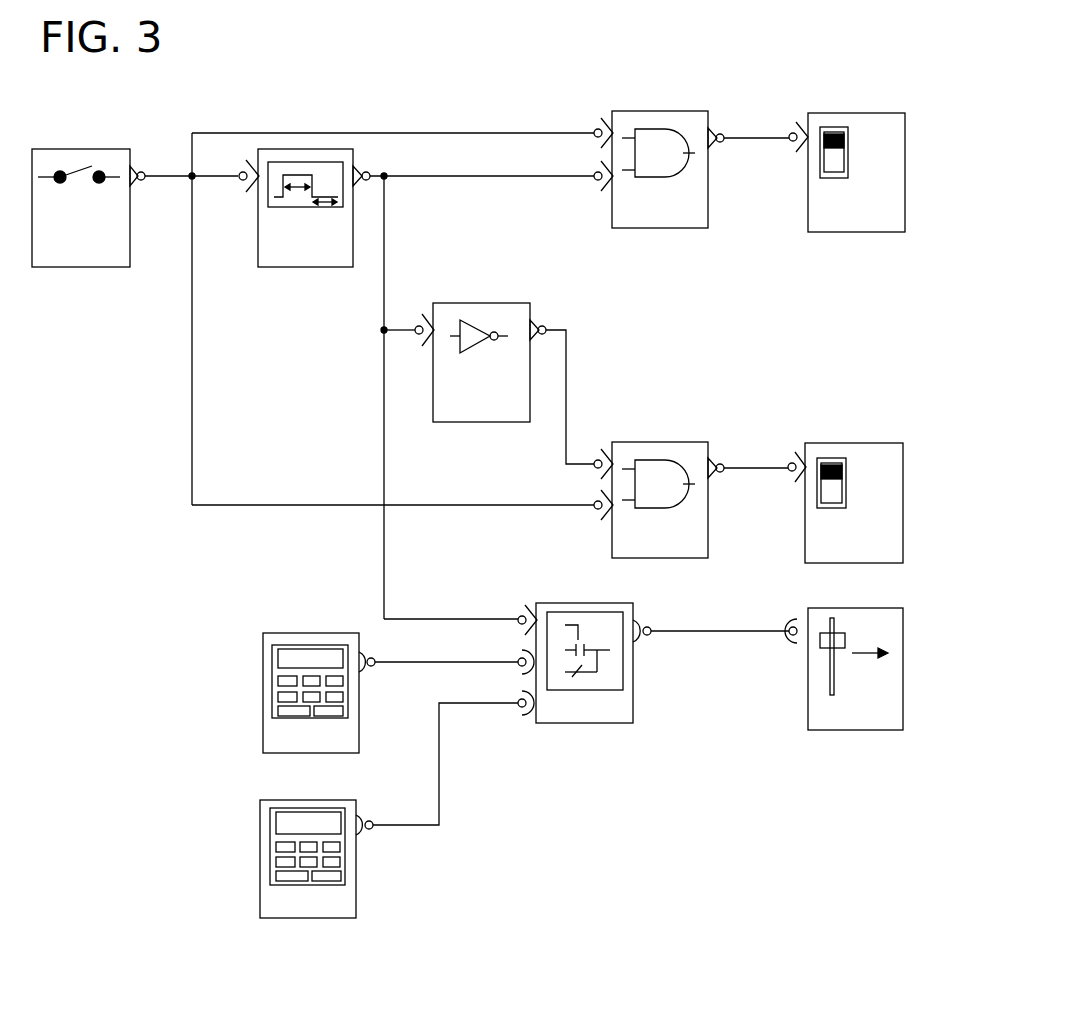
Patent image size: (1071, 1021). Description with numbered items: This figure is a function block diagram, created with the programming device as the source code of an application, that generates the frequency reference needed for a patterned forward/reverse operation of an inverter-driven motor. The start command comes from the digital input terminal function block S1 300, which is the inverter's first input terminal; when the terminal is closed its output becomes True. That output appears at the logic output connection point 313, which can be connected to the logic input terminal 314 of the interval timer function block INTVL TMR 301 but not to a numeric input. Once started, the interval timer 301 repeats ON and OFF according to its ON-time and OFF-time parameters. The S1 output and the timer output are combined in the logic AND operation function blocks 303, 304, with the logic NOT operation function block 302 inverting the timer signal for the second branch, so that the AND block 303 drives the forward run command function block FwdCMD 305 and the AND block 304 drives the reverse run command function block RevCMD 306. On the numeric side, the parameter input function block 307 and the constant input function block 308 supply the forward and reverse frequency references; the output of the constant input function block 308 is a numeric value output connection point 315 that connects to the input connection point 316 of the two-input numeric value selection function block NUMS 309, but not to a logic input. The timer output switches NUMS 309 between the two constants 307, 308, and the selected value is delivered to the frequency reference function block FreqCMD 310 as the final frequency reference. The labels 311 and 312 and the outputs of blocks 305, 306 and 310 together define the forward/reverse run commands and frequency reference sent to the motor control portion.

The digital input terminal 1 function block S1 300 is at (48, 148).
The logic interval timer function block INTVL TMR 301 is at (277, 250).
The logic NOT operation function block 302 is at (452, 305).
The logic AND operation function block 303 is at (618, 112).
The logic AND operation function block 304 is at (625, 445).
The forward run command function block FwdCMD 305 is at (815, 115).
The reverse run command function block RevCMD 306 is at (815, 445).
The parameter input function block Q1-01 307 is at (265, 652).
The constant input function block Q1-02 308 is at (270, 818).
The two input numeric value selection function block NUMS 309 is at (541, 605).
The frequency reference function block FreqCMD 310 is at (843, 718).
The output value display True 311 is at (158, 135).
The connection wire 312 is at (392, 782).
The logic output connection point 313 is at (147, 186).
The logic input terminal 314 is at (246, 162).
The numeric value output connection point 315 is at (375, 835).
The input connection point 316 is at (536, 727).